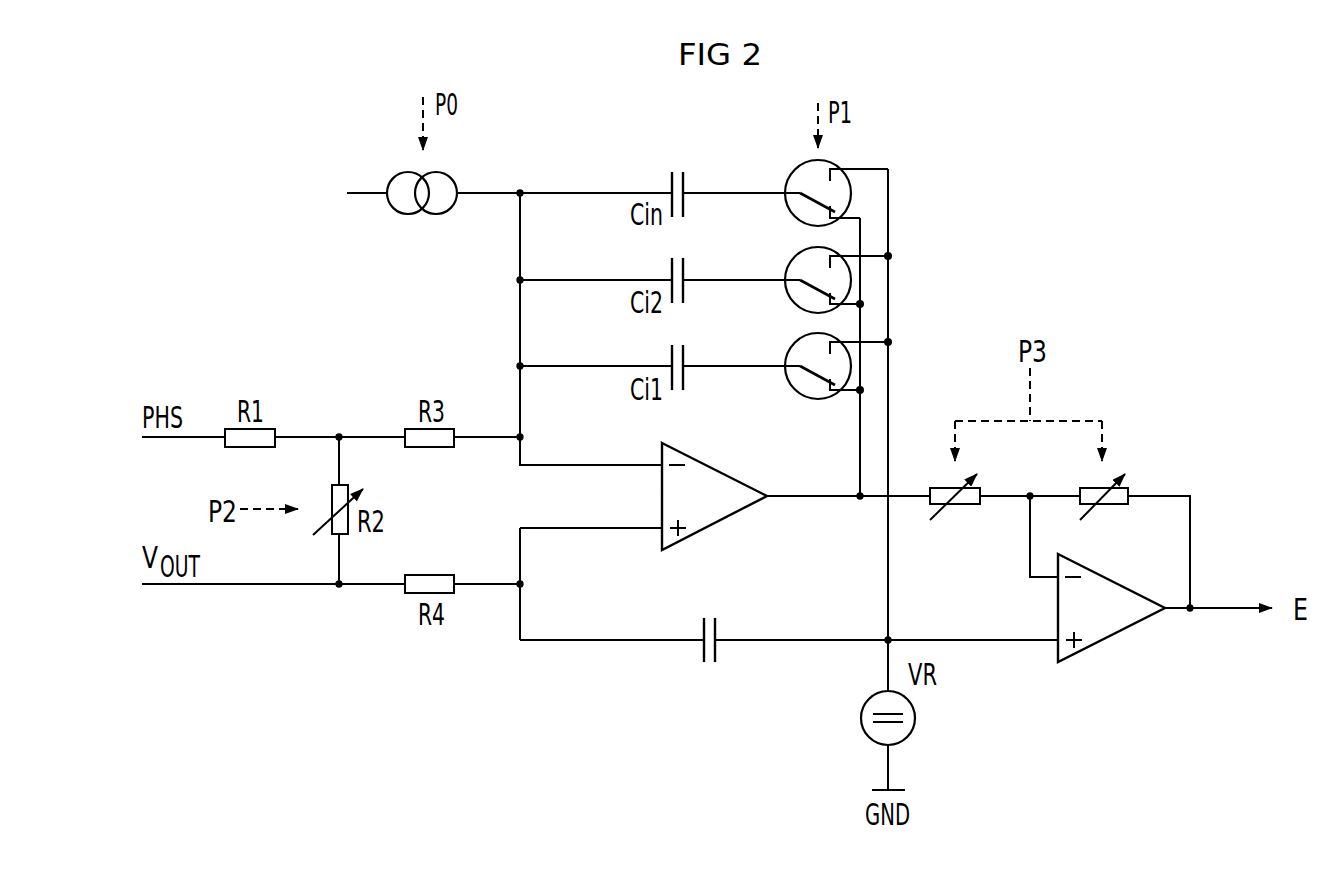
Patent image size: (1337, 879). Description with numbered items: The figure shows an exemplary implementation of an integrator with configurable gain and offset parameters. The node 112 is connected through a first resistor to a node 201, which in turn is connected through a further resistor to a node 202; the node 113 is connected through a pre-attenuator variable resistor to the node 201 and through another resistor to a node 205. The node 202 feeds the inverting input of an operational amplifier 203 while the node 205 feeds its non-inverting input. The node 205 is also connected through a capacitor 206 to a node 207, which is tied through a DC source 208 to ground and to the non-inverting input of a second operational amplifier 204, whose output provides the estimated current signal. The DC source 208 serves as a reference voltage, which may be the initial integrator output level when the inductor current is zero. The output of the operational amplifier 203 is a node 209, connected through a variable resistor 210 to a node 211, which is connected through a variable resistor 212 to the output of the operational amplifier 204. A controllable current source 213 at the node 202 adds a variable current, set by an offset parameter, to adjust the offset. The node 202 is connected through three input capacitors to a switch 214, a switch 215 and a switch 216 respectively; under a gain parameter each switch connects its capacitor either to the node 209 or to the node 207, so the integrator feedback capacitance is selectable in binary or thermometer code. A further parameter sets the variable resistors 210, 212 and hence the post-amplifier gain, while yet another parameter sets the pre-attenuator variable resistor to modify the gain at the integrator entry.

The node 112 is at (196, 432).
The node 113 is at (203, 586).
The node 201 is at (340, 432).
The node 202 is at (524, 437).
The operational amplifier 203 is at (710, 467).
The operational amplifier 204 is at (1107, 638).
The node 205 is at (524, 584).
The capacitor 206 is at (700, 655).
The node 207 is at (885, 637).
The DC source 208 is at (916, 720).
The node 209 is at (857, 493).
The variable resistor 210 is at (968, 507).
The node 211 is at (1030, 491).
The variable resistor 212 is at (1115, 507).
The controllable current source 213 is at (409, 215).
The switch 214 is at (792, 176).
The switch 215 is at (792, 263).
The switch 216 is at (792, 350).